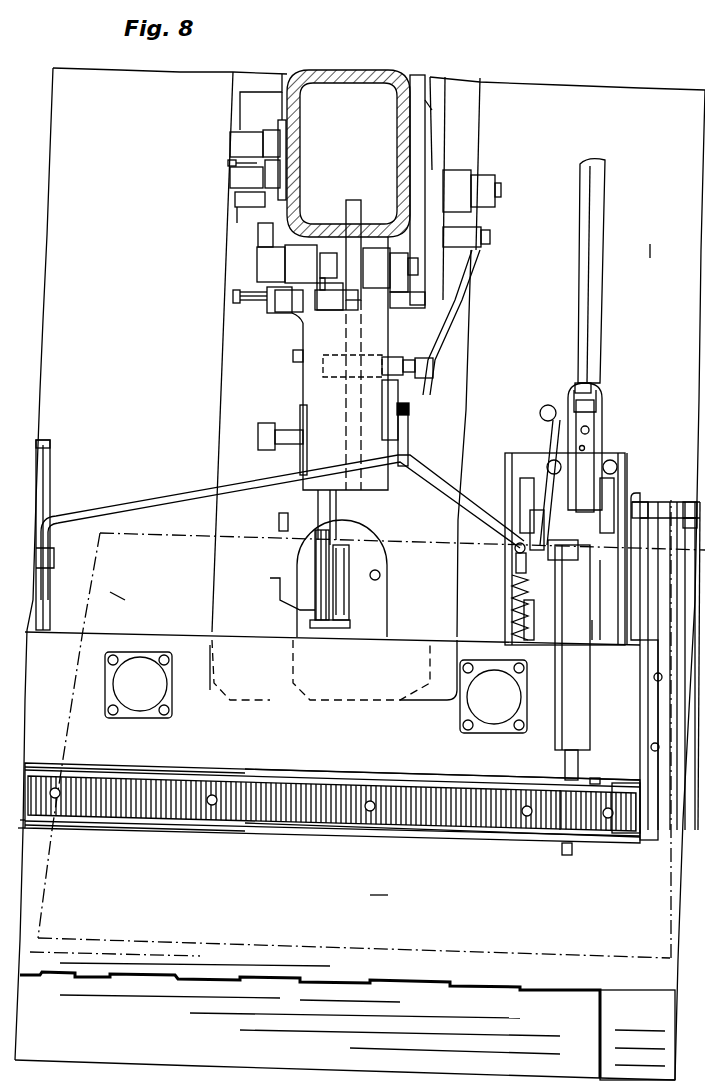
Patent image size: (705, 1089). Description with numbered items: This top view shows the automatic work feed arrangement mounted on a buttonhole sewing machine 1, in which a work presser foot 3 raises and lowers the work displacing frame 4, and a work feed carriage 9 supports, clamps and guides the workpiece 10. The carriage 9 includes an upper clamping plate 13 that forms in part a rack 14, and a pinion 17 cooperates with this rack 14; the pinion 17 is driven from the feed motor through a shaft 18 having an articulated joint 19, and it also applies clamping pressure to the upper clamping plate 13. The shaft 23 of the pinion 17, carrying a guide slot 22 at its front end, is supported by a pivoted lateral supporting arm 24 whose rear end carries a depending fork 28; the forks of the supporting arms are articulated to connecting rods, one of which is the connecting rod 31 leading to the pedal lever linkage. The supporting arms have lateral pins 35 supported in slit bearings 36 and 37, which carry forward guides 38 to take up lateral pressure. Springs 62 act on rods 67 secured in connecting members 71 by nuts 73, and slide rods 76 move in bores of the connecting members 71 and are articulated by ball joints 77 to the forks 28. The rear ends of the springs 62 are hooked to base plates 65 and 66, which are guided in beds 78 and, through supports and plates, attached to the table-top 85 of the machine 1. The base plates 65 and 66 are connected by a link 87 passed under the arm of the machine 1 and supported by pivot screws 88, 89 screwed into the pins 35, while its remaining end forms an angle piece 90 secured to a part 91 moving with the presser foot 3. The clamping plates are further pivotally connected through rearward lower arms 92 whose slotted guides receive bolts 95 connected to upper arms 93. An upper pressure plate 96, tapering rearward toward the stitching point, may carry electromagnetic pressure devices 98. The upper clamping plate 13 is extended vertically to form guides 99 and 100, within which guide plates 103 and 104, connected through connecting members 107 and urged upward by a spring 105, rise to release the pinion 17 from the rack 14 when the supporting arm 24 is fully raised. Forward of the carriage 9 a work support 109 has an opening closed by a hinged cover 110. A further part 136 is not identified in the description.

The machine 1 is at (322, 392).
The work presser foot 3 is at (323, 504).
The work displacing frame 4 is at (348, 604).
The work feed carriage 9 is at (379, 887).
The workpiece 10 is at (100, 594).
The upper clamping plate 13 is at (28, 828).
The rack 14 is at (322, 830).
The pinion 17 is at (560, 835).
The shaft 18 is at (598, 282).
The articulated joint 19 is at (603, 406).
The guide slot 22 is at (566, 855).
The shaft of the driving pinion 23 is at (582, 470).
The supporting arm 24 is at (572, 695).
The depending fork 28 is at (585, 405).
The connecting rod 31 is at (650, 832).
The lateral pin 35 is at (590, 565).
The slit bearing 36 is at (622, 520).
The slit bearing 37 is at (46, 482).
The forward guide 38 is at (585, 625).
The spring 62 is at (516, 575).
The base plate 65 is at (530, 458).
The base plate 66 is at (44, 440).
The rod 67 is at (524, 626).
The connecting member 71 is at (532, 515).
The nut 73 is at (512, 600).
The slide rod 76 is at (506, 466).
The ball joint 77 is at (548, 405).
The bed 78 is at (620, 470).
The table-top 85 is at (649, 243).
The link 87 is at (165, 505).
The pivot screw 88 is at (515, 545).
The pivot screw 89 is at (54, 553).
The angle piece 90 is at (409, 438).
The part moving with the presser foot 91 is at (409, 418).
The lower arm 92 is at (687, 500).
The upper arm 93 is at (658, 520).
The bolt 95 is at (668, 500).
The upper pressure plate 96 is at (196, 632).
The electromagnetic pressure device 98 is at (140, 690).
The guide 99 is at (262, 830).
The guide 100 is at (295, 775).
The guide plate 103 is at (80, 832).
The guide plate 104 is at (62, 765).
The spring 105 is at (620, 835).
The connecting member 107 is at (595, 780).
The work support 109 is at (630, 1001).
The hinged cover 110 is at (285, 1003).
The cap 136 is at (592, 388).